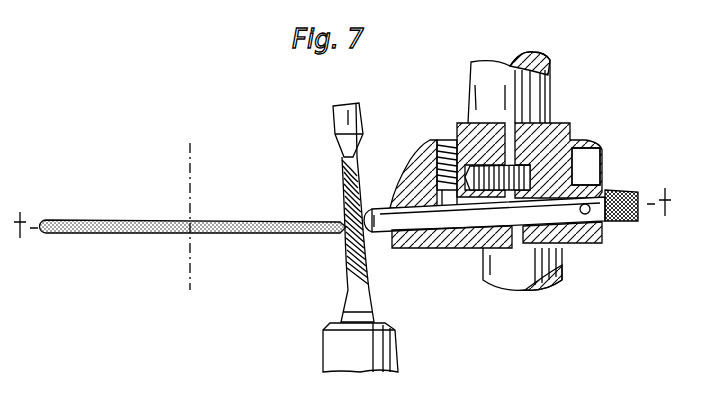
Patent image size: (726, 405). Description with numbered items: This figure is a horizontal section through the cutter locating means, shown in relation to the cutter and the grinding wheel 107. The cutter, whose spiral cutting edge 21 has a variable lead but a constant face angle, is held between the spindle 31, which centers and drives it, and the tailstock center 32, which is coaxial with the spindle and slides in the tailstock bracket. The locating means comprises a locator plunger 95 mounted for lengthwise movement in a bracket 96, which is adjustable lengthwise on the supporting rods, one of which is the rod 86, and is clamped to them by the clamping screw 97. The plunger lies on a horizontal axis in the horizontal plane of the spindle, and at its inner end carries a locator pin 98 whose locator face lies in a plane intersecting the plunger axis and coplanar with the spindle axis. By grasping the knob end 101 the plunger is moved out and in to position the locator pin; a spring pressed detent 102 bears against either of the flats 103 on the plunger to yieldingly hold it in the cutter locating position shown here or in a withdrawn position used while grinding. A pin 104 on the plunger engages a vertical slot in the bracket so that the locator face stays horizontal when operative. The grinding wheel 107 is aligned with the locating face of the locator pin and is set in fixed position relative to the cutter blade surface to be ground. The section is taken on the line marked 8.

The section line 8- 8 is at (341, 225).
The grinding wheel 107 is at (140, 233).
The tailstock center 32 is at (357, 128).
The spiral cutting edge 21 is at (343, 263).
The spindle 31 is at (396, 352).
The bracket 96 is at (566, 134).
The spring pressed detent 102 is at (444, 195).
The clamping screw 97 is at (600, 158).
The locator plunger 95 is at (572, 212).
The locator pin 98 is at (373, 210).
The knob end 101 is at (622, 192).
The pin 104 is at (590, 216).
The flats 103 is at (444, 210).
The supporting rod 86 is at (560, 273).